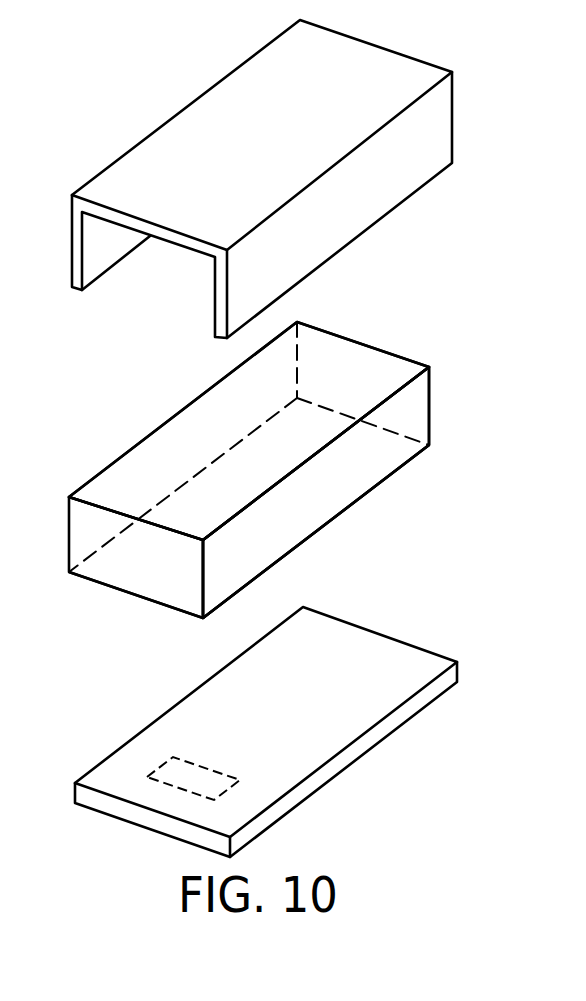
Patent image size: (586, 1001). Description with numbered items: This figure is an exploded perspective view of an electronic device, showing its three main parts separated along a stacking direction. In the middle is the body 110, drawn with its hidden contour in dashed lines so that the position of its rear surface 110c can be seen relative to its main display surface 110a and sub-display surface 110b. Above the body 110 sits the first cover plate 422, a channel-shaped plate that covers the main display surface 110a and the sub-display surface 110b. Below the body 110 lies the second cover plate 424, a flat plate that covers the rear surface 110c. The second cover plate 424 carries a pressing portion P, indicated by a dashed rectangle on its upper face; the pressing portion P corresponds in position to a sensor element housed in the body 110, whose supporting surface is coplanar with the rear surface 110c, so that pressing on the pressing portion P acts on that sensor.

The first cover plate 422 is at (363, 62).
The body 110 is at (152, 582).
The main display surface 110a is at (365, 373).
The sub-display surface 110b is at (374, 463).
The rear surface 110c is at (291, 530).
The second cover plate 424 is at (383, 647).
The pressing portion P is at (175, 772).